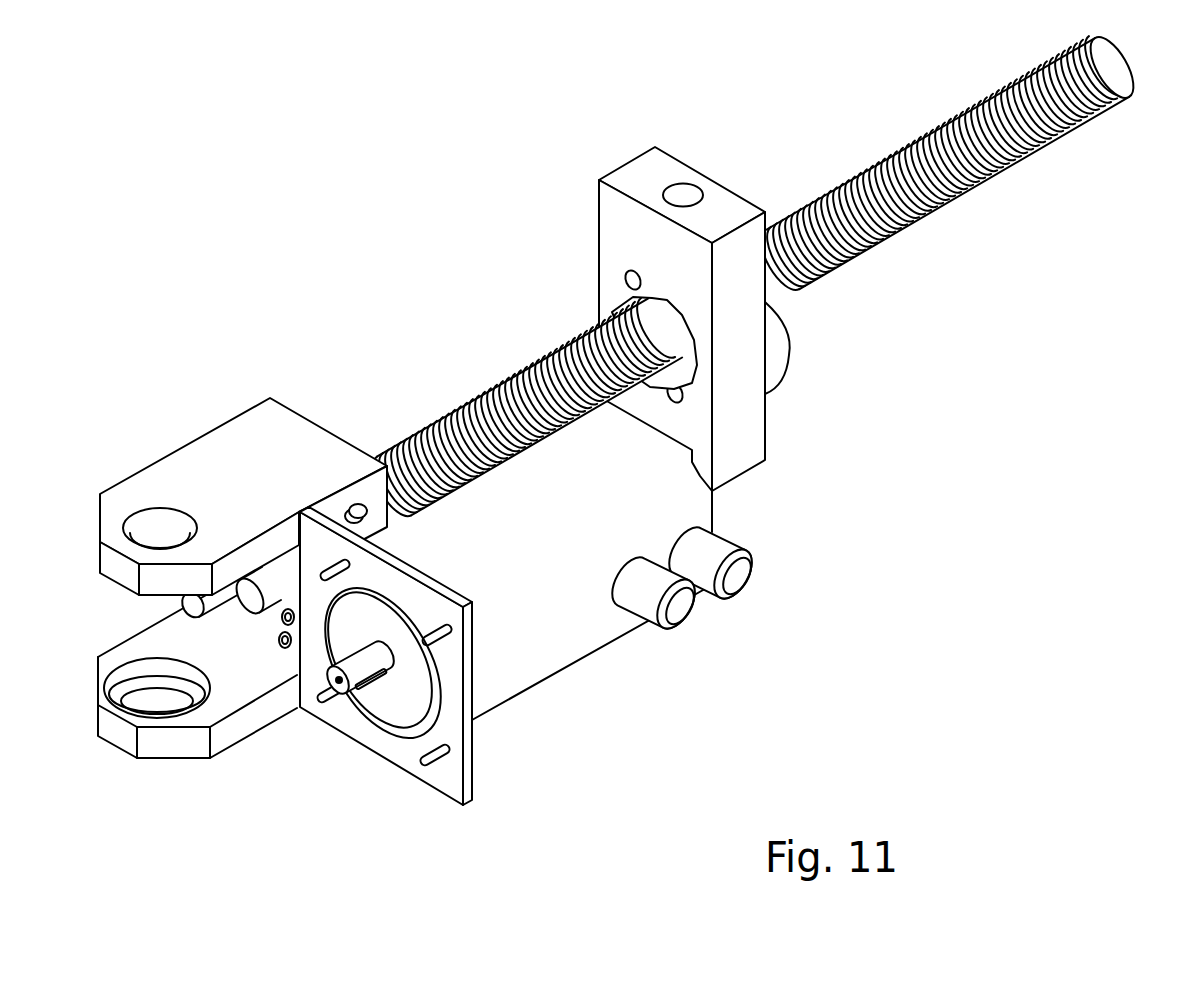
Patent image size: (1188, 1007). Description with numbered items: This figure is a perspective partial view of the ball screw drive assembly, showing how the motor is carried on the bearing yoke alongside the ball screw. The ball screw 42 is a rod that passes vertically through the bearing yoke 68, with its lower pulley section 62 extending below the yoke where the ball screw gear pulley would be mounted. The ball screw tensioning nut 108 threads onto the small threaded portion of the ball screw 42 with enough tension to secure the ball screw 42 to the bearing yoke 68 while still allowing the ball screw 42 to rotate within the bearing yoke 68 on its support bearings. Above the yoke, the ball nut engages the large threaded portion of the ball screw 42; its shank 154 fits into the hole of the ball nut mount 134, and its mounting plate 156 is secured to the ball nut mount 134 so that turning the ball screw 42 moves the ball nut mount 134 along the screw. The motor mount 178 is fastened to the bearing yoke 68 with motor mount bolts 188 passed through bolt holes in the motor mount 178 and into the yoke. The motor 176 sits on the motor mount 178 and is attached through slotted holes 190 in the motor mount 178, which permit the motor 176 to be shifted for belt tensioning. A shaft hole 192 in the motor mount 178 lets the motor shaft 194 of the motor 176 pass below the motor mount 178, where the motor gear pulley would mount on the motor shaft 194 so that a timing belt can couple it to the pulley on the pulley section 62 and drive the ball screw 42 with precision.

The ball screw 42 is at (1068, 128).
The pulley section 62 is at (217, 603).
The bearing yoke 68 is at (275, 412).
The ball screw tensioning nut 108 is at (250, 613).
The ball nut mount 134 is at (765, 432).
The shank 154 is at (652, 307).
The mounting plate 156 is at (775, 325).
The motor 176 is at (700, 511).
The motor mount 178 is at (462, 796).
The motor mount bolts 188 is at (356, 507).
The slotted holes 190 is at (448, 643).
The shaft hole 192 is at (432, 722).
The motor shaft 194 is at (346, 692).